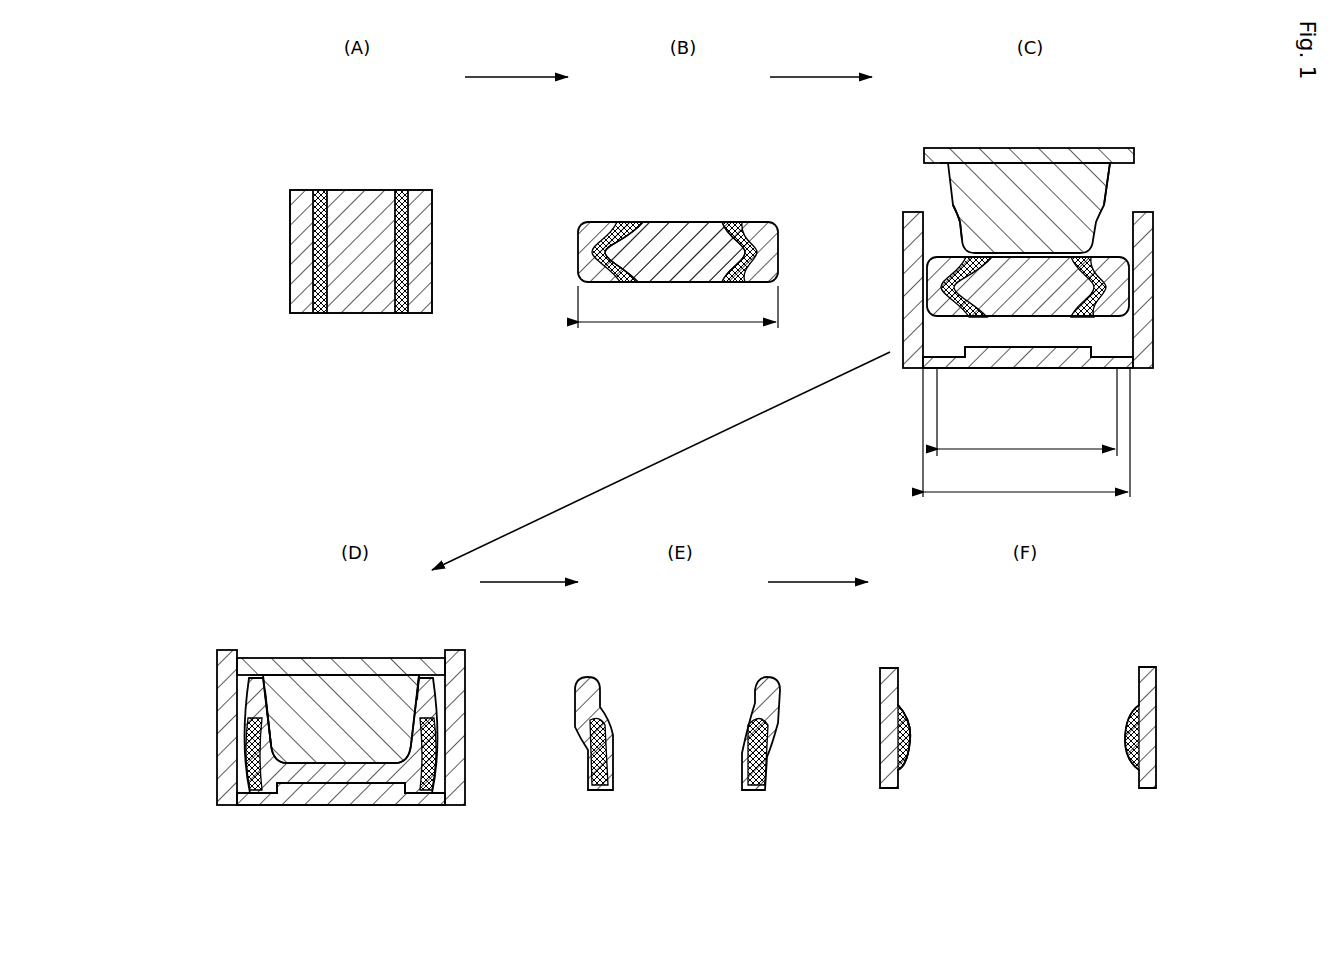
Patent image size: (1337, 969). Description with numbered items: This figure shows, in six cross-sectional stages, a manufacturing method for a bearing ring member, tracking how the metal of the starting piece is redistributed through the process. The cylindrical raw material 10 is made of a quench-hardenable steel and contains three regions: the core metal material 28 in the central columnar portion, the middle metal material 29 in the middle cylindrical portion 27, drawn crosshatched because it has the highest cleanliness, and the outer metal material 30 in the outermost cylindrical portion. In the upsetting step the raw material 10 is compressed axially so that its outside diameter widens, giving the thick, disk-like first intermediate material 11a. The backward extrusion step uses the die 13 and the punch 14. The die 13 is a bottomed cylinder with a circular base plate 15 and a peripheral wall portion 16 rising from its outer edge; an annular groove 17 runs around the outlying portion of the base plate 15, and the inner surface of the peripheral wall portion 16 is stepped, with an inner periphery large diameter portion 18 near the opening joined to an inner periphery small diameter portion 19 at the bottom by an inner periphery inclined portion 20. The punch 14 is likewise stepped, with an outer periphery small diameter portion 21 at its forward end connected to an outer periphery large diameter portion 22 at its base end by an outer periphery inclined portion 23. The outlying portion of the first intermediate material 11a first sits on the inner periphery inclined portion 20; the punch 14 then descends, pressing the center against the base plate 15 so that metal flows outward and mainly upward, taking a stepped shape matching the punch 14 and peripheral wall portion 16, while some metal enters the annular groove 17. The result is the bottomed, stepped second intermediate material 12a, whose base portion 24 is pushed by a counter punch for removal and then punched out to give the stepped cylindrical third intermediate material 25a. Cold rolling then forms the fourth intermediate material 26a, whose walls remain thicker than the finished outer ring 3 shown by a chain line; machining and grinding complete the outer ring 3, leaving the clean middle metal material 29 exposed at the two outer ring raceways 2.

The raw material 10 is at (340, 208).
The core metal material 28 is at (364, 198).
The middle cylindrical portion 27 is at (403, 200).
The middle metal material 29 is at (250, 738).
The outer metal material 30 is at (421, 247).
The first intermediate material 11a is at (650, 245).
The punch 14 is at (1047, 162).
The outer periphery large diameter portion 22 is at (949, 158).
The outer periphery small diameter portion 21 is at (960, 225).
The outer periphery inclined portion 23 is at (1108, 208).
The die 13 is at (675, 539).
The peripheral wall portion 16 is at (916, 226).
The inner periphery large diameter portion 18 is at (1130, 232).
The base plate 15 is at (1060, 352).
The annular groove 17 is at (962, 352).
The inner periphery small diameter portion 19 is at (1108, 342).
The inner periphery inclined portion 20 is at (1128, 327).
The second intermediate material 12a is at (245, 690).
The base portion 24 is at (345, 775).
The third intermediate material 25a is at (757, 792).
The outer ring 3 is at (890, 667).
The outer ring raceway 2 is at (905, 693).
The fourth intermediate material 26a is at (1148, 790).